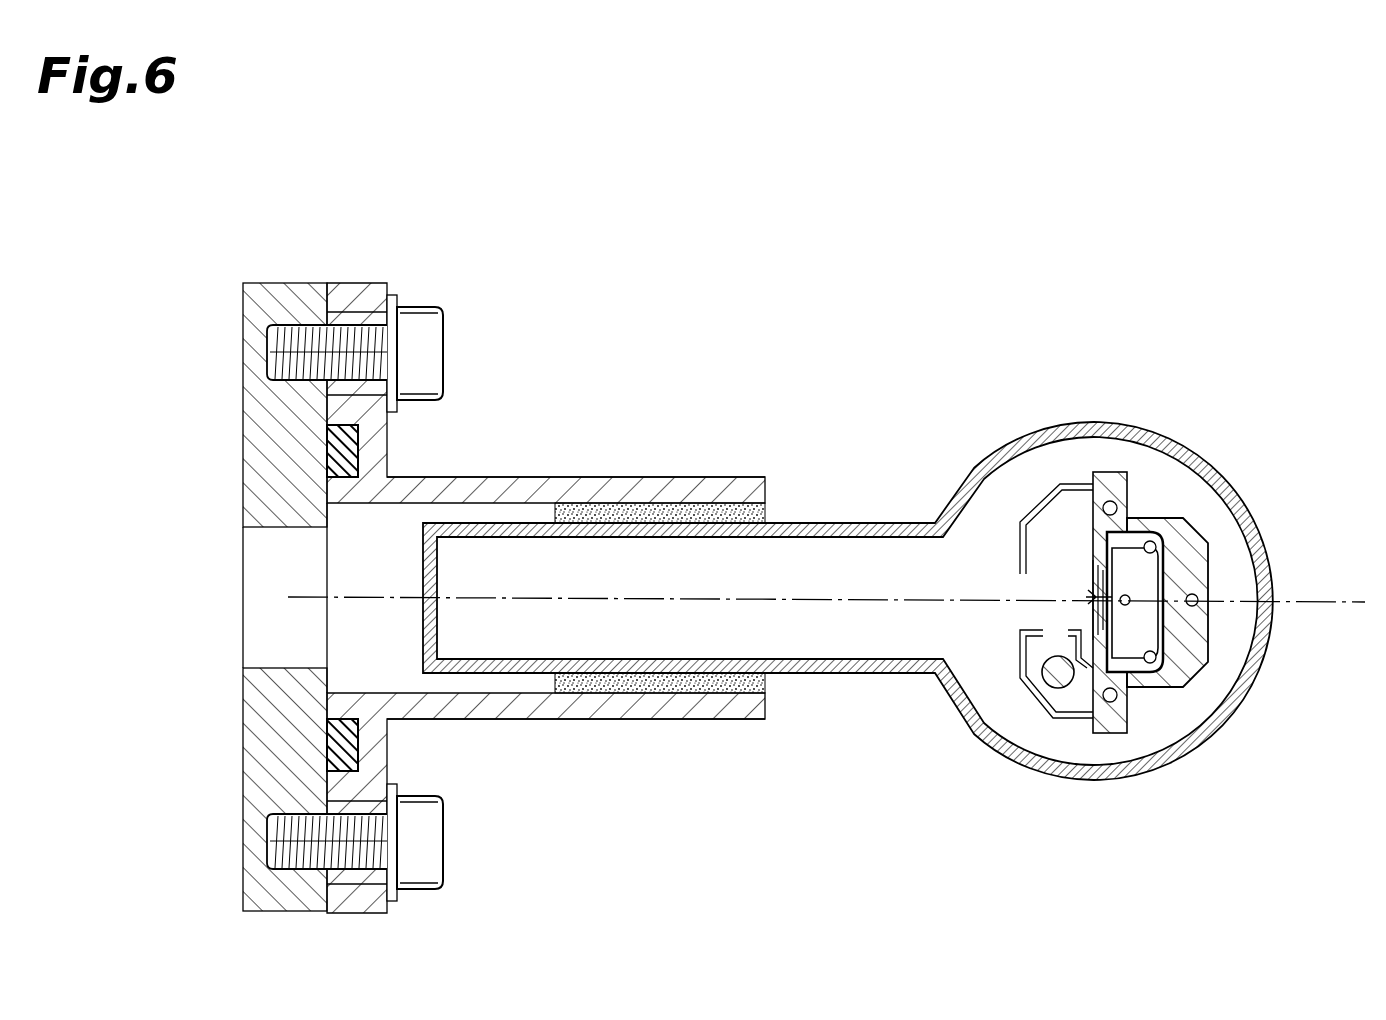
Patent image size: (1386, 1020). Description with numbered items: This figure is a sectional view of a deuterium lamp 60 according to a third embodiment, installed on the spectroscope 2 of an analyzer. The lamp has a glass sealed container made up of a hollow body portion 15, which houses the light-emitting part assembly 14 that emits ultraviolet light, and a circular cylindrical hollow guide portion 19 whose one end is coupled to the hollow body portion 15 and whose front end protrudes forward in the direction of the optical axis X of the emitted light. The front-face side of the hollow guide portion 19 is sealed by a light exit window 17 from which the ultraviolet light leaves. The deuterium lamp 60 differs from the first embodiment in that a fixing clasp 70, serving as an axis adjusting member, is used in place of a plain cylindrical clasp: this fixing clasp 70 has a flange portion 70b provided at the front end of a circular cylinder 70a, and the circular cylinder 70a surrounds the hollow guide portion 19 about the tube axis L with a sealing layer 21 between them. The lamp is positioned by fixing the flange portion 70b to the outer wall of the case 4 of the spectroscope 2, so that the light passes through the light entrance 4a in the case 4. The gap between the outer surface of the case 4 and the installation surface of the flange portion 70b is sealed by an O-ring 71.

The spectroscope 2 is at (227, 554).
The case 4 is at (243, 350).
The light entrance 4a is at (265, 537).
The light-emitting part assembly 14 is at (1163, 716).
The hollow body portion 15 is at (1120, 427).
The light exit window 17 is at (423, 573).
The hollow guide portion 19 is at (912, 523).
The sealing layer 21 is at (768, 512).
The deuterium lamp 60 is at (811, 522).
The fixing clasp 70 is at (516, 566).
The circular cylinder 70a is at (618, 489).
The flange portion 70b is at (370, 291).
The O-ring 71 is at (360, 456).
The tube axis L is at (396, 601).
The optical axis X is at (850, 603).